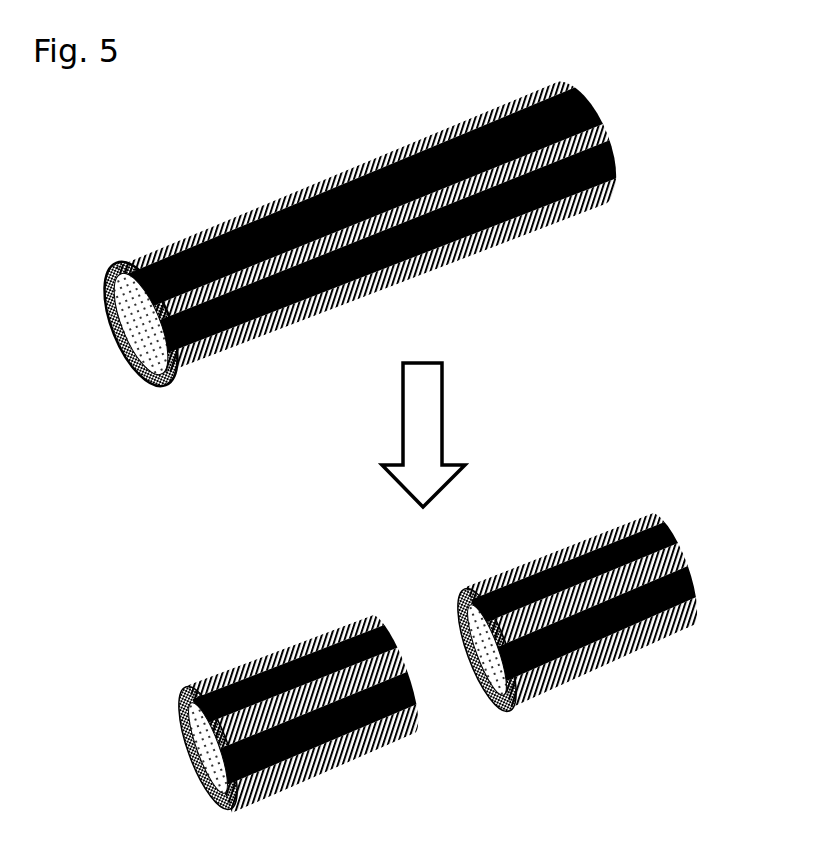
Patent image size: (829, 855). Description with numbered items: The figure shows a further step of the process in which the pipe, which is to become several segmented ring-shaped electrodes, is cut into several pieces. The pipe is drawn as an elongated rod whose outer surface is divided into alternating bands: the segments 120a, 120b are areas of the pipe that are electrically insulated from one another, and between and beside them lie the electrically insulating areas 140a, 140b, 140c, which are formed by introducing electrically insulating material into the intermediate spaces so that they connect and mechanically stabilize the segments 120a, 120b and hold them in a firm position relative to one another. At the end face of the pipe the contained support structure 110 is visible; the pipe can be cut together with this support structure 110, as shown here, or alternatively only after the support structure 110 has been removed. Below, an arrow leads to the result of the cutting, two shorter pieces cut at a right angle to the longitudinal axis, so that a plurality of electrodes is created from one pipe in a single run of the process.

The support structure 110 is at (140, 340).
The segment 120a is at (587, 98).
The segment 120b is at (613, 167).
The electrically insulating area 140a is at (462, 121).
The electrically insulating area 140b is at (610, 130).
The electrically insulating area 140c is at (525, 234).